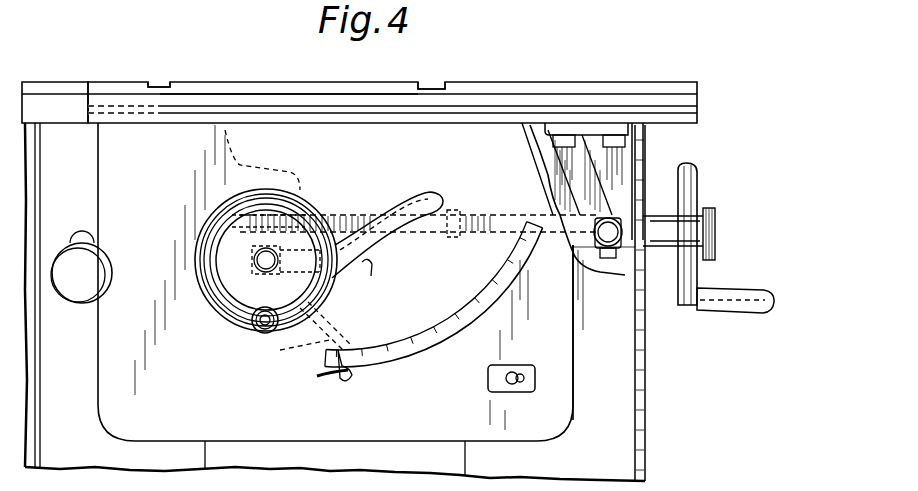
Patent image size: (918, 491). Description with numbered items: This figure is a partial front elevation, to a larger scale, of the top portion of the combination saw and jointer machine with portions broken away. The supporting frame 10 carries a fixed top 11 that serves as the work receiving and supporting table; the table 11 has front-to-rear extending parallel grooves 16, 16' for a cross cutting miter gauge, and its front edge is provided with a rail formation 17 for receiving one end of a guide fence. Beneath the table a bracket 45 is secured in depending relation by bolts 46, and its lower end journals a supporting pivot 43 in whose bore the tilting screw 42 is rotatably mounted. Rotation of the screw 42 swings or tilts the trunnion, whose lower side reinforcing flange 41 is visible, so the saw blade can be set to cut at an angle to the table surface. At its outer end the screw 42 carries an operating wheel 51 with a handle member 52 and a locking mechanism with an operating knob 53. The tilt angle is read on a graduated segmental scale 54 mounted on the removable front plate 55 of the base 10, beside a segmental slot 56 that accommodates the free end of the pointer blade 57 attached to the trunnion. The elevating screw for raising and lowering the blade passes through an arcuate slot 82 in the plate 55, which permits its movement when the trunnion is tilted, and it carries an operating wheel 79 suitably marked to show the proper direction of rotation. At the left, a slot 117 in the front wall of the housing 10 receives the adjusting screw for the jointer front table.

The supporting frame 10 is at (642, 390).
The fixed top 11 is at (540, 82).
The groove 16 is at (436, 69).
The groove 16' is at (168, 67).
The rail formation 17 is at (303, 94).
The lower side reinforcing flange 41 is at (608, 258).
The tilting screw 42 is at (462, 215).
The supporting pivot 43 is at (600, 235).
The bracket 45 is at (615, 175).
The bolts 46 is at (553, 142).
The operating wheel 51 is at (697, 185).
The handle member 52 is at (730, 312).
The operating knob 53 is at (716, 236).
The graduated segmental scale 54 is at (472, 316).
The removable front plate 55 is at (573, 385).
The segmental slot 56 is at (388, 364).
The pointer blade 57 is at (298, 348).
The operating wheel 79 is at (208, 316).
The arcuate slot 82 is at (372, 272).
The slot 117 is at (82, 300).